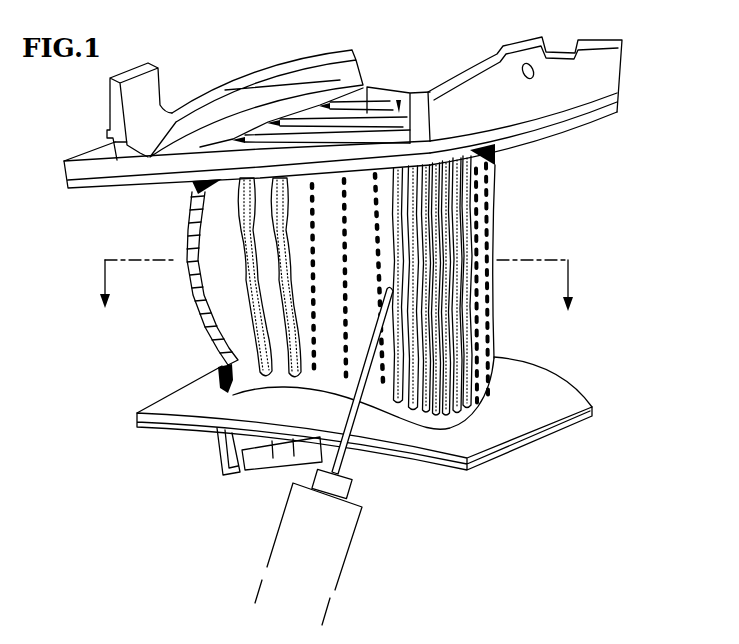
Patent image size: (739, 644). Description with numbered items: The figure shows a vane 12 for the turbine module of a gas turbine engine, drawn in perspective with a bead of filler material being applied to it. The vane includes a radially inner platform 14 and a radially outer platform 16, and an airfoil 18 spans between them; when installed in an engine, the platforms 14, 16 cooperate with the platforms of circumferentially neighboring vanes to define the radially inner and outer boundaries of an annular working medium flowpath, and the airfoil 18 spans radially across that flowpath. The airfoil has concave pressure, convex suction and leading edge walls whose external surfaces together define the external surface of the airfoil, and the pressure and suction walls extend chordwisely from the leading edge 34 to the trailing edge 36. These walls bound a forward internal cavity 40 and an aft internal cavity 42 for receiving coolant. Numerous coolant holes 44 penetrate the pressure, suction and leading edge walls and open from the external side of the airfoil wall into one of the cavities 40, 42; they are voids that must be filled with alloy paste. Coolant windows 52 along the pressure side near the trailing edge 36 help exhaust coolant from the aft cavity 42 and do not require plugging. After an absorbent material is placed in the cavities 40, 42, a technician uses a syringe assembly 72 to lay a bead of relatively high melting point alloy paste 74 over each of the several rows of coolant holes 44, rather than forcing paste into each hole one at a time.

The vane 12 is at (355, 331).
The radially inner platform 14 is at (552, 400).
The radially outer platform 16 is at (590, 113).
The airfoil 18 is at (233, 307).
The leading edge 34 is at (473, 232).
The trailing edge 36 is at (183, 245).
The forward internal cavity 40 is at (402, 94).
The aft internal cavity 42 is at (377, 113).
The coolant holes 44 is at (383, 372).
The coolant windows 52 is at (190, 287).
The syringe assembly 72 is at (300, 532).
The alloy paste 74 is at (385, 287).